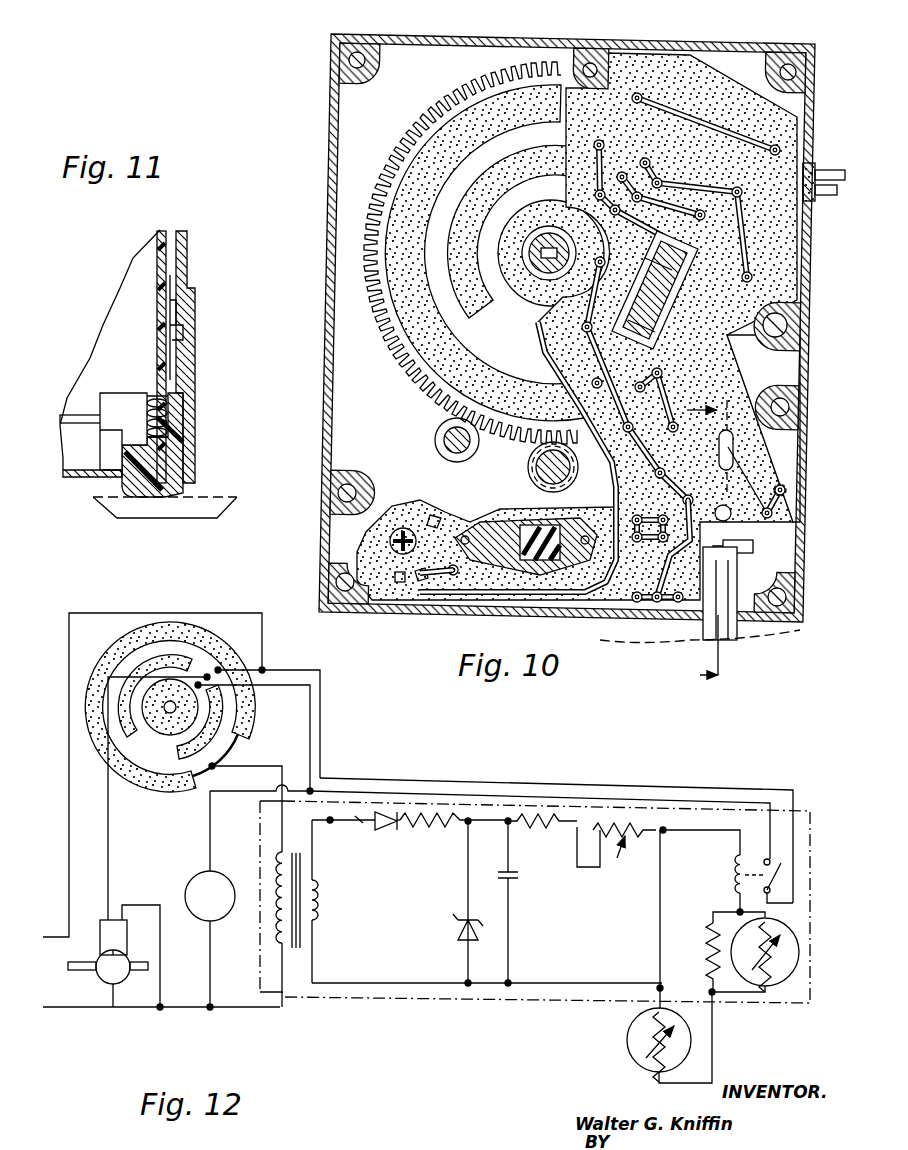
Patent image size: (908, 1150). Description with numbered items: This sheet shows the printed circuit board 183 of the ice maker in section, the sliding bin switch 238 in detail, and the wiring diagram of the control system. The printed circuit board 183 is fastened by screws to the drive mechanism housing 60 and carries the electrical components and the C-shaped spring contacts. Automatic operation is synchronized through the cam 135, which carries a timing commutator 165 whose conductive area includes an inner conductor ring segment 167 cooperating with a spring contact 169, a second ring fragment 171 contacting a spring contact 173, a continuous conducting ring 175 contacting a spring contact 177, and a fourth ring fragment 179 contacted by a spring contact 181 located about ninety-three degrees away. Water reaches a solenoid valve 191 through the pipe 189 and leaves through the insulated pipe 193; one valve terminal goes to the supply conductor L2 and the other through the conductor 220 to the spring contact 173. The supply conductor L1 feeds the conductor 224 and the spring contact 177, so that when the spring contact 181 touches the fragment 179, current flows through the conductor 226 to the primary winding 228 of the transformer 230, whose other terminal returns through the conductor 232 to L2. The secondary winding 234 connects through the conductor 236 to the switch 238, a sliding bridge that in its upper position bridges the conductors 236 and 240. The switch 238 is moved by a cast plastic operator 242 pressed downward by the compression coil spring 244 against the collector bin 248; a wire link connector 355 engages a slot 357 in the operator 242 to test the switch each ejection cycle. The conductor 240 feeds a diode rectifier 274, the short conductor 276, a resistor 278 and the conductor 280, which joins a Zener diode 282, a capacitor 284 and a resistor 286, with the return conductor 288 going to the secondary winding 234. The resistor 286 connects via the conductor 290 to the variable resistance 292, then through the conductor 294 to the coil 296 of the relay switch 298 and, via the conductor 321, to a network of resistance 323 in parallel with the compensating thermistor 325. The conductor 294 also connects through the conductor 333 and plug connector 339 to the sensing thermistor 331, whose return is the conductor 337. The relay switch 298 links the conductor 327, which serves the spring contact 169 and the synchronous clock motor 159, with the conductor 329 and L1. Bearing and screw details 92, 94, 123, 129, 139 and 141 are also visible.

In FIG. 10, the housing 60 is at (335, 37).
In FIG. 11, the housing 60 is at (187, 247).
In FIG. 10, the bearing 92 is at (535, 465).
In FIG. 10, the bearing ring 94 is at (570, 475).
In FIG. 10, the mounting screws 123 is at (358, 52).
In FIG. 10, the mounting screw 129 is at (788, 327).
In FIG. 10, the cam 135 is at (463, 85).
In FIG. 10, the gear hub 139 is at (548, 250).
In FIG. 10, the gear rim 141 is at (455, 108).
In FIG. 12, the synchronous clock motor 159 is at (222, 875).
In FIG. 10, the timing commutator 165 is at (425, 150).
In FIG. 12, the timing commutator 165 is at (103, 745).
In FIG. 10, the inner conductor ring segment 167 is at (508, 190).
In FIG. 12, the inner conductor ring segment 167 is at (175, 665).
In FIG. 12, the spring contact 169 is at (225, 705).
In FIG. 10, the fragment of a ring 171 is at (480, 325).
In FIG. 12, the fragment of a ring 171 is at (140, 760).
In FIG. 12, the spring contact 173 is at (210, 670).
In FIG. 10, the third continuous conducting ring 175 is at (397, 320).
In FIG. 12, the third continuous conducting ring 175 is at (142, 648).
In FIG. 12, the spring contact 177 is at (232, 660).
In FIG. 10, the fourth fragment of conducting ring 179 is at (735, 342).
In FIG. 12, the fourth fragment of conducting ring 179 is at (205, 780).
In FIG. 12, the spring contact 181 is at (220, 763).
In FIG. 10, the printed circuit board 183 is at (725, 80).
In FIG. 11, the printed circuit board 183 is at (157, 240).
In FIG. 12, the printed circuit board 183 is at (812, 835).
In FIG. 12, the pipe 189 is at (140, 972).
In FIG. 12, the solenoid valve 191 is at (110, 993).
In FIG. 12, the insulated pipe 193 is at (85, 972).
In FIG. 10, the conductor 220 is at (668, 192).
In FIG. 12, the conductor 220 is at (108, 870).
In FIG. 10, the conductor 224 is at (720, 180).
In FIG. 12, the conductor 224 is at (75, 612).
In FIG. 10, the conductor 226 is at (712, 440).
In FIG. 12, the conductor 226 is at (260, 802).
In FIG. 12, the primary winding 228 is at (270, 912).
In FIG. 12, the transformer 230 is at (305, 985).
In FIG. 10, the conductor 232 is at (768, 235).
In FIG. 12, the conductor 232 is at (290, 995).
In FIG. 12, the secondary winding 234 is at (322, 900).
In FIG. 10, the conductor 236 is at (752, 492).
In FIG. 12, the conductor 236 is at (360, 840).
In FIG. 10, the switch 238 is at (790, 502).
In FIG. 11, the switch 238 is at (180, 295).
In FIG. 12, the switch 238 is at (340, 825).
In FIG. 10, the conductor 240 is at (728, 518).
In FIG. 12, the conductor 240 is at (367, 835).
In FIG. 10, the operator 242 is at (738, 630).
In FIG. 11, the operator 242 is at (187, 460).
In FIG. 10, the compression type coil spring 244 is at (755, 548).
In FIG. 11, the compression type coil spring 244 is at (150, 393).
In FIG. 10, the plastic collector bin 248 is at (800, 632).
In FIG. 11, the plastic collector bin 248 is at (182, 491).
In FIG. 12, the diode rectifier 274 is at (392, 832).
In FIG. 10, the short conductor 276 is at (667, 596).
In FIG. 12, the short conductor 276 is at (405, 812).
In FIG. 12, the resistor 278 is at (450, 815).
In FIG. 10, the conductor 280 is at (650, 518).
In FIG. 12, the conductor 280 is at (497, 818).
In FIG. 12, the Zener diode 282 is at (462, 945).
In FIG. 12, the capacitor 284 is at (515, 880).
In FIG. 12, the resistor 286 is at (560, 812).
In FIG. 10, the conductor 288 is at (665, 415).
In FIG. 12, the conductor 288 is at (486, 990).
In FIG. 10, the conductor 290 is at (525, 598).
In FIG. 12, the conductor 290 is at (588, 868).
In FIG. 12, the variable resistance 292 is at (634, 848).
In FIG. 10, the conductor 294 is at (651, 548).
In FIG. 12, the conductor 294 is at (685, 835).
In FIG. 10, the coil 296 is at (640, 385).
In FIG. 12, the coil 296 is at (735, 885).
In FIG. 12, the relay switch 298 is at (785, 878).
In FIG. 10, the conductor 321 is at (595, 330).
In FIG. 12, the conductor 321 is at (735, 912).
In FIG. 12, the resistance 323 is at (708, 968).
In FIG. 12, the compensating thermistor 325 is at (790, 960).
In FIG. 10, the conductor 327 is at (598, 135).
In FIG. 12, the conductor 327 is at (612, 800).
In FIG. 10, the conductor 329 is at (700, 252).
In FIG. 12, the conductor 329 is at (760, 790).
In FIG. 12, the sensing thermistor 331 is at (650, 1025).
In FIG. 12, the conductor 333 is at (658, 965).
In FIG. 12, the conductor 337 is at (715, 1040).
In FIG. 10, the plug connector 339 is at (500, 525).
In FIG. 11, the wire link connector 355 is at (72, 414).
In FIG. 11, the slot 357 is at (112, 435).
In FIG. 10, the supply conductor L1 is at (835, 176).
In FIG. 12, the supply conductor L1 is at (46, 915).
In FIG. 12, the supply conductor L2 is at (156, 1021).